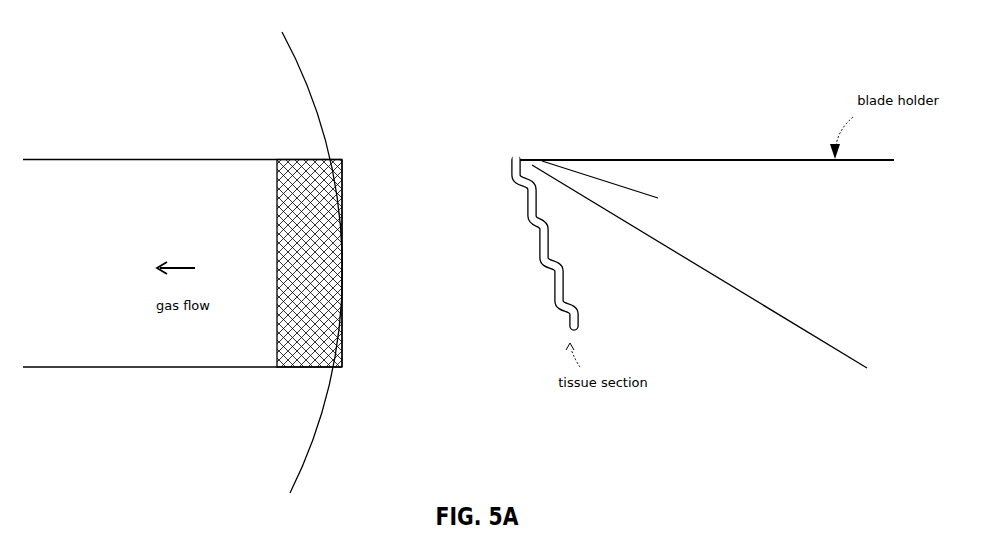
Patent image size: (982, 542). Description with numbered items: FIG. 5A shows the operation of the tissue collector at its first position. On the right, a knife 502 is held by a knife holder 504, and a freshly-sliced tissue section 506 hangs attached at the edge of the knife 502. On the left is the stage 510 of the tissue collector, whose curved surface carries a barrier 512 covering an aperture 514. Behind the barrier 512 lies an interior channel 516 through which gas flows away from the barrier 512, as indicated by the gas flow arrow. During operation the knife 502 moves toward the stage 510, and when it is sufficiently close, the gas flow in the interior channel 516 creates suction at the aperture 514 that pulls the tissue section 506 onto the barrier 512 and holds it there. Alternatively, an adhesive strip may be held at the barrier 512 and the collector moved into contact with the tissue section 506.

The knife 502 is at (529, 147).
The knife holder 504 is at (753, 188).
The tissue section 506 is at (542, 245).
The stage 510 is at (278, 80).
The barrier 512 is at (317, 200).
The aperture 514 is at (342, 310).
The interior channel 516 is at (125, 183).